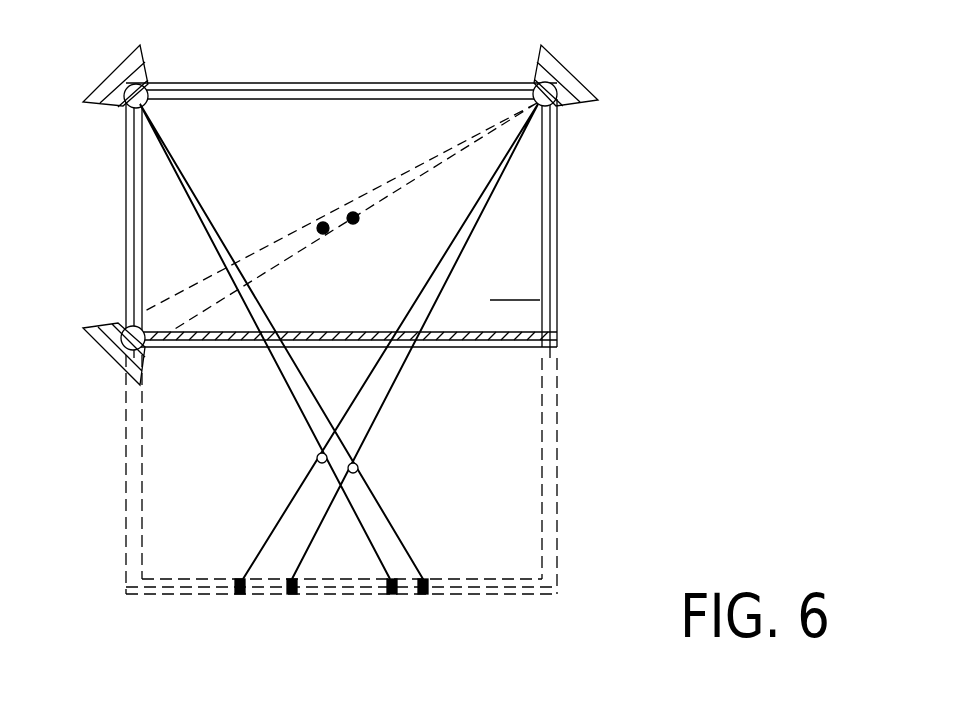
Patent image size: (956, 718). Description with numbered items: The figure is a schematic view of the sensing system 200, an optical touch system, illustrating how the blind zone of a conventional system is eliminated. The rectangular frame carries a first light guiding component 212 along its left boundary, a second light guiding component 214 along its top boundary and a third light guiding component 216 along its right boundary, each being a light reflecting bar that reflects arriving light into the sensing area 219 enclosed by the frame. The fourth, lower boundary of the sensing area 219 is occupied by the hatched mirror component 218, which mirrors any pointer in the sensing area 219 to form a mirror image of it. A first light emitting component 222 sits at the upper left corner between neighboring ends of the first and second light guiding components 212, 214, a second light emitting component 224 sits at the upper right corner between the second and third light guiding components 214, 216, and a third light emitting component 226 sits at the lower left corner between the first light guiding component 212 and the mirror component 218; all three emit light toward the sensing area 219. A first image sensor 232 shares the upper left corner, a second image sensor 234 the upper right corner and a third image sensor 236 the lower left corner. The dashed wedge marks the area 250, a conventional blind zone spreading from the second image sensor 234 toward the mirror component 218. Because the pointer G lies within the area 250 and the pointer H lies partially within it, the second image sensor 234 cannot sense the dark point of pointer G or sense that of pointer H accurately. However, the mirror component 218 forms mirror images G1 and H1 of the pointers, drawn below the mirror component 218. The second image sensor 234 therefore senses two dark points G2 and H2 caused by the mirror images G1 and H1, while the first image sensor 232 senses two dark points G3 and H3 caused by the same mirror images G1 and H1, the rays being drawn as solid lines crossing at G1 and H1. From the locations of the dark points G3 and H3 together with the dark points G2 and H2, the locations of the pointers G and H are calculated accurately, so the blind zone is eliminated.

The sensing system 200 is at (632, 572).
The first light guiding component 212 is at (140, 203).
The second light guiding component 214 is at (318, 97).
The third light guiding component 216 is at (545, 218).
The mirror component 218 is at (540, 335).
The sensing area 219 is at (499, 303).
The first light emitting component 222 is at (130, 96).
The second light emitting component 224 is at (557, 104).
The third light emitting component 226 is at (128, 326).
The first image sensor 232 is at (102, 90).
The second image sensor 234 is at (568, 85).
The third image sensor 236 is at (120, 358).
The area 250 is at (420, 172).
The pointer G is at (325, 222).
The pointer H is at (352, 224).
The mirror image G1 is at (317, 458).
The mirror image H1 is at (358, 468).
The dark point G2 is at (244, 605).
The dark point H2 is at (284, 605).
The dark point G3 is at (390, 605).
The dark point H3 is at (430, 605).